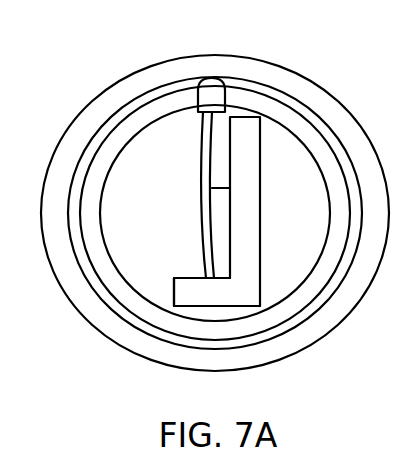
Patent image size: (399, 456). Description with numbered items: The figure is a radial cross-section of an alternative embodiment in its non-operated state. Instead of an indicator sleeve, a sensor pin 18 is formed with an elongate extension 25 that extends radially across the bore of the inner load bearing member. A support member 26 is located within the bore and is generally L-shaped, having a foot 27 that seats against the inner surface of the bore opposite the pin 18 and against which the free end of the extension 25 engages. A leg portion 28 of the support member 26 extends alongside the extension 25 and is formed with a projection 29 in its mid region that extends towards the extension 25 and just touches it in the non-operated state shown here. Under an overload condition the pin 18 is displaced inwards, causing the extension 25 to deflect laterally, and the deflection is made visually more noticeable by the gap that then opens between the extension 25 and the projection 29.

The sensor pin 18 is at (203, 79).
The elongate extension 25 is at (203, 237).
The support member 26 is at (268, 228).
The foot 27 is at (217, 293).
The leg portion 28 is at (248, 167).
The projection 29 is at (218, 196).